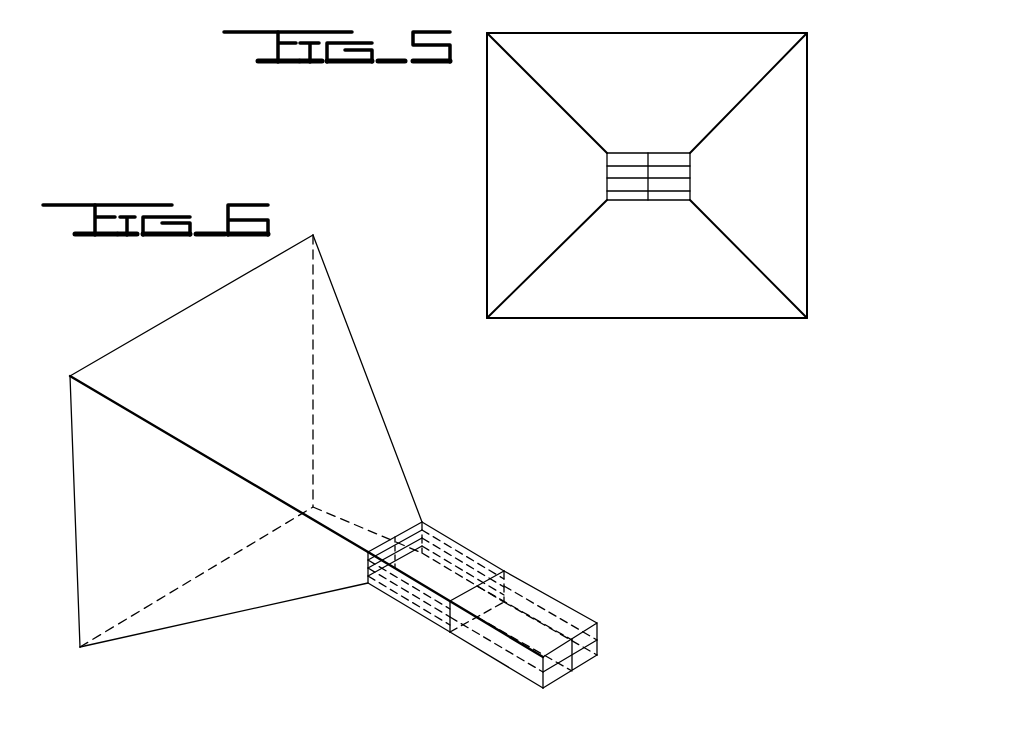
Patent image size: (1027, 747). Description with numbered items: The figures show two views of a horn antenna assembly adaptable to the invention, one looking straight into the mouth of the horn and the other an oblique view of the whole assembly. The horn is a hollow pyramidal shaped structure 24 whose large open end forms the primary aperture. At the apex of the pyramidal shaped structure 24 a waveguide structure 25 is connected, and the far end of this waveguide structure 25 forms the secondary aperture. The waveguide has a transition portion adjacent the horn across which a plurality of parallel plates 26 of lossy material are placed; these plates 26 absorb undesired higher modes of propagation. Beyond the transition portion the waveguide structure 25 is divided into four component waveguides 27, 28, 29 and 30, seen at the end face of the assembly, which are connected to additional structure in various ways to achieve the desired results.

In FIG. 5, the hollow pyramidal shaped structure 24 is at (808, 62).
In FIG. 6, the hollow pyramidal shaped structure 24 is at (70, 415).
In FIG. 6, the waveguide structure 25 is at (542, 589).
In FIG. 5, the parallel plates of lossy material 26 is at (690, 171).
In FIG. 6, the parallel plates of lossy material 26 is at (500, 587).
In FIG. 6, the component waveguide 27 is at (542, 670).
In FIG. 6, the component waveguide 28 is at (558, 672).
In FIG. 6, the component waveguide 29 is at (597, 650).
In FIG. 6, the component waveguide 30 is at (597, 633).